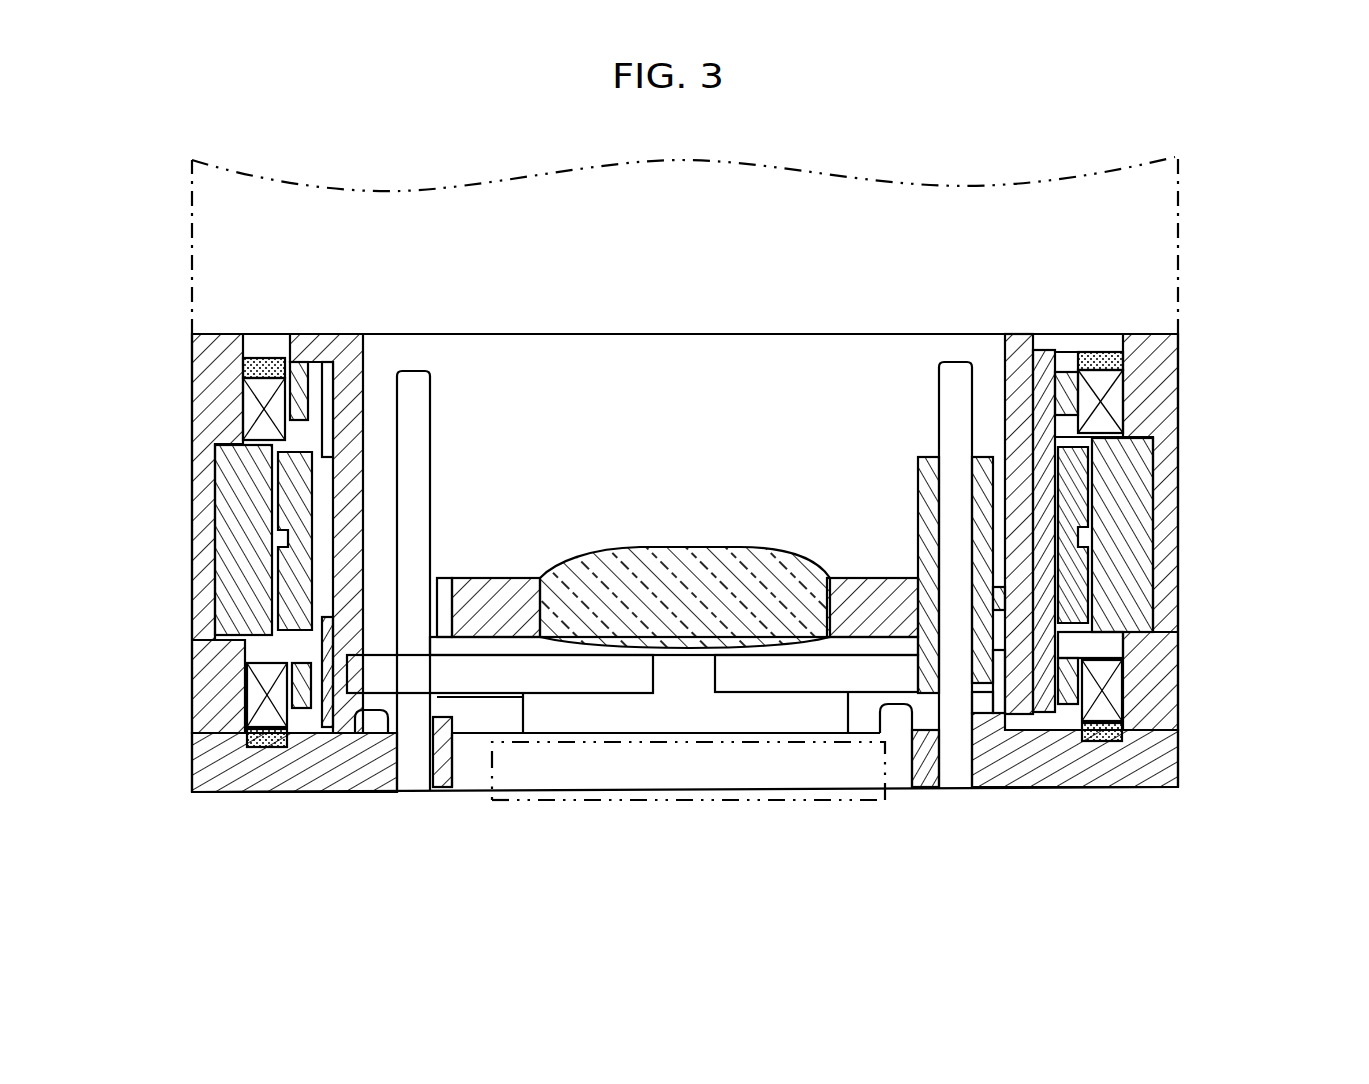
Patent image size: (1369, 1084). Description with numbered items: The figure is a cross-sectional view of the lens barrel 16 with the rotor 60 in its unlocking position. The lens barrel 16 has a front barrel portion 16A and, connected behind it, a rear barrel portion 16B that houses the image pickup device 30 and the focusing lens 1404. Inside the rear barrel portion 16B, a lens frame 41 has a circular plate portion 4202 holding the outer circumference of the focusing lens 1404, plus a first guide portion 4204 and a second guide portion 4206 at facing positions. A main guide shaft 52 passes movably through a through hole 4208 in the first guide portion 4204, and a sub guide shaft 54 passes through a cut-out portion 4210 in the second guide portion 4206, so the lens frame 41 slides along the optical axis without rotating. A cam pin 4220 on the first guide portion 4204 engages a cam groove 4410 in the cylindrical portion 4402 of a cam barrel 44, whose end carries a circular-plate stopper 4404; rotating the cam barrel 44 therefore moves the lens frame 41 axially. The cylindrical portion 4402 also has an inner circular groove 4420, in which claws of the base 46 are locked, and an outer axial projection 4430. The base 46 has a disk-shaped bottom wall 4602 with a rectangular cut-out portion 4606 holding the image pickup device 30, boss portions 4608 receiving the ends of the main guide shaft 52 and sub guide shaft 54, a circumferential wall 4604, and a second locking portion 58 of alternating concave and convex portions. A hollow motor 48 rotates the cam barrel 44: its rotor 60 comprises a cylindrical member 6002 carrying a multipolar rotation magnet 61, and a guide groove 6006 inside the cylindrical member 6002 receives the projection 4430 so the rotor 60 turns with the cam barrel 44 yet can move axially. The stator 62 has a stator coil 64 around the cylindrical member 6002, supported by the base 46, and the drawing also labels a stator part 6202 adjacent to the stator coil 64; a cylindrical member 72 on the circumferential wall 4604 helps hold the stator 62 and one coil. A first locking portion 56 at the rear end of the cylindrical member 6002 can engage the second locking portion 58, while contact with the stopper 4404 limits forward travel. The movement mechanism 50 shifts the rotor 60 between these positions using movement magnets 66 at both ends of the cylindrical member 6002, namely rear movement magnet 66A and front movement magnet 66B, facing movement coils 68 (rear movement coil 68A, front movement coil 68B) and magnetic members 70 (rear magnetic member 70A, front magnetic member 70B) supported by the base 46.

The movement mechanism 50 is at (150, 300).
The lens barrel 16 is at (650, 822).
The front barrel portion 16A is at (1180, 212).
The rear barrel portion 16B is at (1183, 703).
The image pickup device 30 is at (760, 803).
The lens frame 41 is at (674, 426).
The circular plate portion 4202 is at (505, 577).
The first guide portion 4204 is at (917, 500).
The second guide portion 4206 is at (491, 557).
The through hole 4208 is at (915, 580).
The cut-out portion 4210 is at (440, 590).
The cam pin 4220 is at (1003, 607).
The focusing lens 1404 is at (700, 572).
The cam barrel 44 is at (960, 463).
The cylindrical portion 4402 is at (1008, 428).
The stopper 4404 is at (1098, 352).
The cam groove 4410 is at (1125, 635).
The circular groove 4420 is at (1003, 740).
The projection 4430 is at (320, 447).
The base 46 is at (1040, 775).
The bottom wall 4602 is at (196, 675).
The circumferential wall 4604 is at (1165, 592).
The rectangular cut-out portion 4606 is at (470, 760).
The boss portions 4608 is at (360, 775).
The hollow motor 48 is at (1206, 528).
The main guide shaft 52 is at (945, 383).
The sub guide shaft 54 is at (403, 385).
The first locking portion 56 is at (1172, 705).
The second locking portion 58 is at (1070, 775).
The rotor 60 is at (1090, 473).
The rotation magnet 61 is at (1090, 505).
The stator 62 is at (1205, 535).
The stator coil 64 is at (1205, 535).
The cylindrical member 6002 is at (1030, 440).
The guide groove 6006 is at (312, 643).
The coil holder wall 6202 is at (1155, 527).
The movement magnets 66 is at (254, 329).
The rear movement magnet 66A is at (252, 778).
The front movement magnet 66B is at (300, 358).
The movement coils 68 is at (171, 402).
The rear movement coil 68A is at (252, 705).
The front movement coil 68B is at (252, 414).
The magnetic members 70 is at (170, 346).
The rear magnetic member 70A is at (250, 748).
The front magnetic member 70B is at (262, 358).
The cylindrical member 72 is at (1185, 350).